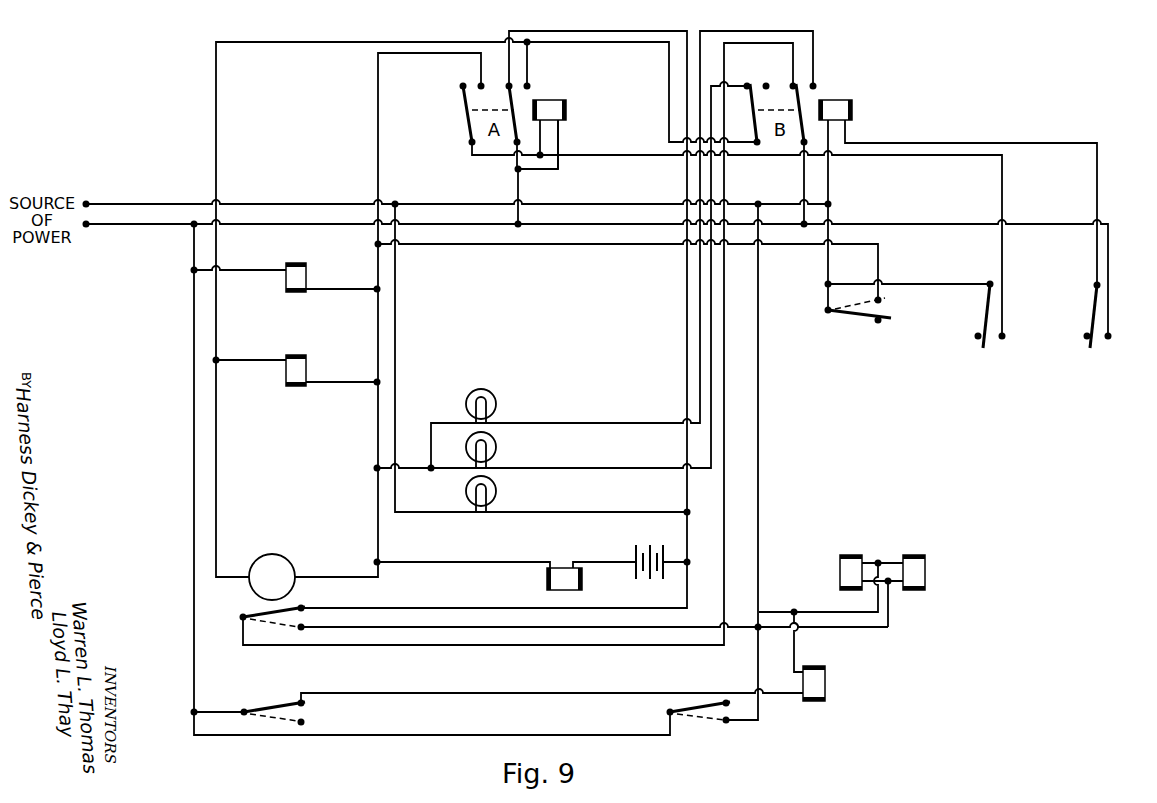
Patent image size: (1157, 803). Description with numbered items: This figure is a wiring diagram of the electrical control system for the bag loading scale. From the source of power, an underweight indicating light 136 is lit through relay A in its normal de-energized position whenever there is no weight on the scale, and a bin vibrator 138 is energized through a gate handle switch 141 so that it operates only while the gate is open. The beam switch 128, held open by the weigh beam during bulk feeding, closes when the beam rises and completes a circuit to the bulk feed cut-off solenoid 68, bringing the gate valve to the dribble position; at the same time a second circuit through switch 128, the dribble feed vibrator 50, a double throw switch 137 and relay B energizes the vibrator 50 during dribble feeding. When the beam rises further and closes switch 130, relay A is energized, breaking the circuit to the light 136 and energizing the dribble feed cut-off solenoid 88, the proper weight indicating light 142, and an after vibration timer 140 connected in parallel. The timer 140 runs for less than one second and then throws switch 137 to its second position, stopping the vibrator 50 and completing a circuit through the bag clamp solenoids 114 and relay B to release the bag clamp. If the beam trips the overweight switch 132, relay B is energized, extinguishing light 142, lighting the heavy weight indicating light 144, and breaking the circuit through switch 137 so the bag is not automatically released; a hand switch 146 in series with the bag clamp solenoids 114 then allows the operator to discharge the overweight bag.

The bulk feed cut-off solenoid 68 is at (303, 291).
The dribble feed cut-off solenoid 88 is at (305, 383).
The heavy weight indicating light 144 is at (532, 406).
The indicating light for proper weight 142 is at (522, 450).
The underweight indicating light 136 is at (530, 494).
The dribble feed vibrator 50 is at (558, 566).
The after vibration timer 140 is at (276, 548).
The double throw switch 137 is at (273, 625).
The gate handle switch 141 is at (353, 706).
The hand switch 146 is at (699, 723).
The switch 128 is at (855, 340).
The switch 130 is at (997, 336).
The overweight switch 132 is at (1099, 337).
The bag clamp solenoids 114 is at (840, 573).
The bin vibrator 138 is at (863, 693).